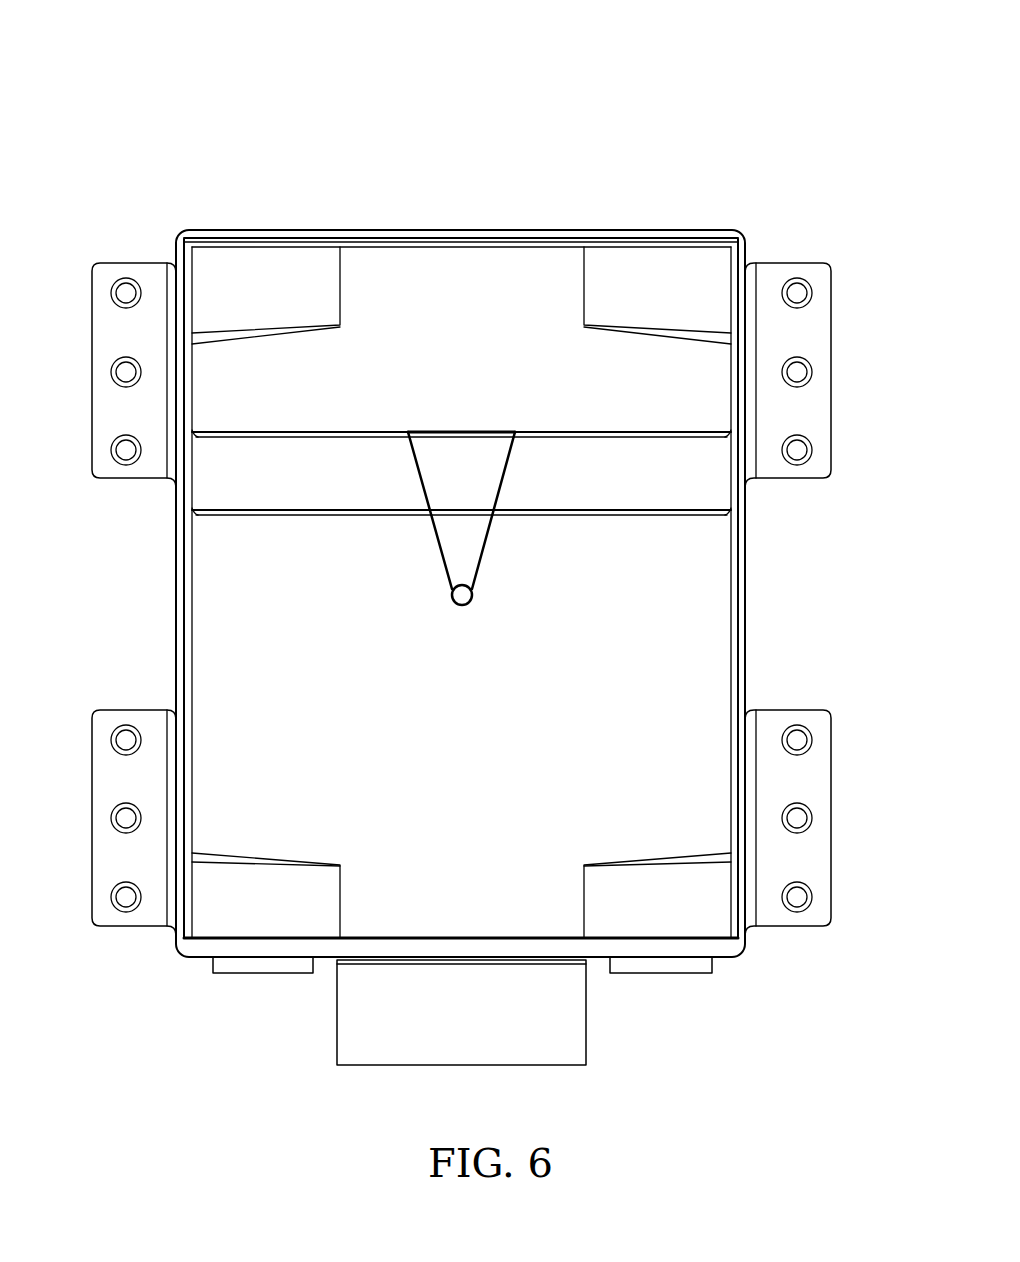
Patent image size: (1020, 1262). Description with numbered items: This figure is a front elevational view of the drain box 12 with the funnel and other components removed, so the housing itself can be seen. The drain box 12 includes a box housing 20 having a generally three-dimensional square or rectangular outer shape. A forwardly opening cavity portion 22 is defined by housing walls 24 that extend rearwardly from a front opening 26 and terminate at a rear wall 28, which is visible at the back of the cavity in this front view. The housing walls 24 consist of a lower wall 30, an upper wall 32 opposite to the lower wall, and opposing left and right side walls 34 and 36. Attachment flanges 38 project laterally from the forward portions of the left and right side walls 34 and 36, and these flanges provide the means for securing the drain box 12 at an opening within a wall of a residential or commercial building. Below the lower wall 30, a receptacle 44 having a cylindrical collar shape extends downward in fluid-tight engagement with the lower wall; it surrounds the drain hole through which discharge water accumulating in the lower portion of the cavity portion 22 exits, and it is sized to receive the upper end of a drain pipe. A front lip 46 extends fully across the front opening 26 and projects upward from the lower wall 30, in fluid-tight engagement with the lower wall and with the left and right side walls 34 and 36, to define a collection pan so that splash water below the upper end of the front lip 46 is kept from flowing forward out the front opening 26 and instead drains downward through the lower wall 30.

The drain box 12 is at (690, 83).
The box housing 20 is at (748, 620).
The cavity portion 22 is at (688, 683).
The housing walls 24 is at (740, 583).
The front opening 26 is at (238, 577).
The rear wall 28 is at (313, 598).
The lower wall 30 is at (672, 947).
The upper wall 32 is at (536, 236).
The left side wall 34 is at (181, 540).
The right side wall 36 is at (740, 543).
The attachment flanges 38 is at (115, 328).
The receptacle 44 is at (535, 1010).
The front lip 46 is at (325, 945).